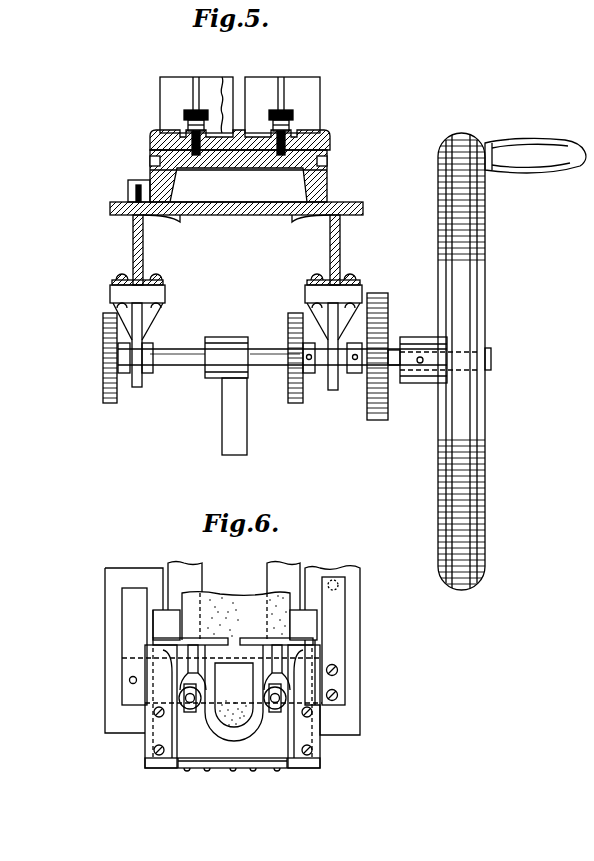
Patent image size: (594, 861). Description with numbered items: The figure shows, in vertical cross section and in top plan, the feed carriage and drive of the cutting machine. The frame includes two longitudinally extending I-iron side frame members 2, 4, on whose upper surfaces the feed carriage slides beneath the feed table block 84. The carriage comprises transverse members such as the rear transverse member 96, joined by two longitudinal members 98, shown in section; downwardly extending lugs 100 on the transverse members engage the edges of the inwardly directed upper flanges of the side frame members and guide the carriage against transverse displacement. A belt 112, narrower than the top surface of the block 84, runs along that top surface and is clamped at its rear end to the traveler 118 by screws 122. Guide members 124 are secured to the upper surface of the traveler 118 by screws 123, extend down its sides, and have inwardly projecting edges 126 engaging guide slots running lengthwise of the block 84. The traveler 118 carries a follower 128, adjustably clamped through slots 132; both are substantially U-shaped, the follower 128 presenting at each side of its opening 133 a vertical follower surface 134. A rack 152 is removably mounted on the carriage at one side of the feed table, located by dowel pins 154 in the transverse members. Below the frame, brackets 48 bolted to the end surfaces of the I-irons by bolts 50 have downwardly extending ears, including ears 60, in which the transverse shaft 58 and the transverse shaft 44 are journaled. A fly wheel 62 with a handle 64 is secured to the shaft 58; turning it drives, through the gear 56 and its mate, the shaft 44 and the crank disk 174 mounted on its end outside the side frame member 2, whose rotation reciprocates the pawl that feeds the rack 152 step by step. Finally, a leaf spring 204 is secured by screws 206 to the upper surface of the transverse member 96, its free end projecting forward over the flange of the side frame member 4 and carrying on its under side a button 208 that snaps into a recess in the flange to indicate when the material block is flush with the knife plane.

In FIG. 5, the side frame member 2 is at (132, 248).
In FIG. 5, the side frame member 4 is at (341, 250).
In FIG. 5, the transverse shaft 44 is at (102, 355).
In FIG. 5, the bracket 48 is at (160, 296).
In FIG. 5, the bolt 50 is at (118, 279).
In FIG. 5, the gear 56 is at (378, 420).
In FIG. 5, the transverse shaft 58 is at (264, 368).
In FIG. 5, the ear 60 is at (140, 390).
In FIG. 5, the fly wheel 62 is at (466, 470).
In FIG. 5, the handle 64 is at (522, 146).
In FIG. 5, the block 84 is at (328, 182).
In FIG. 6, the block 84 is at (370, 603).
In FIG. 5, the transverse member 96 is at (240, 216).
In FIG. 5, the longitudinal member 98 is at (278, 200).
In FIG. 6, the longitudinal member 98 is at (182, 566).
In FIG. 5, the lug 100 is at (178, 220).
In FIG. 5, the belt 112 is at (222, 80).
In FIG. 6, the belt 112 is at (229, 592).
In FIG. 5, the traveler 118 is at (325, 136).
In FIG. 6, the traveler 118 is at (170, 762).
In FIG. 6, the screw 122 is at (224, 771).
In FIG. 6, the screw 123 is at (156, 716).
In FIG. 5, the guide member 124 is at (152, 145).
In FIG. 5, the inwardly projecting edge 126 is at (152, 161).
In FIG. 6, the follower 128 is at (292, 755).
In FIG. 6, the slot 132 is at (268, 688).
In FIG. 6, the opening 133 is at (236, 654).
In FIG. 5, the follower surface 134 is at (175, 82).
In FIG. 6, the follower surface 134 is at (160, 648).
In FIG. 5, the rack 152 is at (127, 188).
In FIG. 6, the rack 152 is at (125, 654).
In FIG. 5, the dowel pin 154 is at (136, 198).
In FIG. 6, the dowel pin 154 is at (129, 680).
In FIG. 5, the crank disk 174 is at (118, 372).
In FIG. 5, the leaf spring 204 is at (364, 207).
In FIG. 6, the leaf spring 204 is at (340, 648).
In FIG. 6, the screw 206 is at (338, 694).
In FIG. 6, the button 208 is at (336, 580).